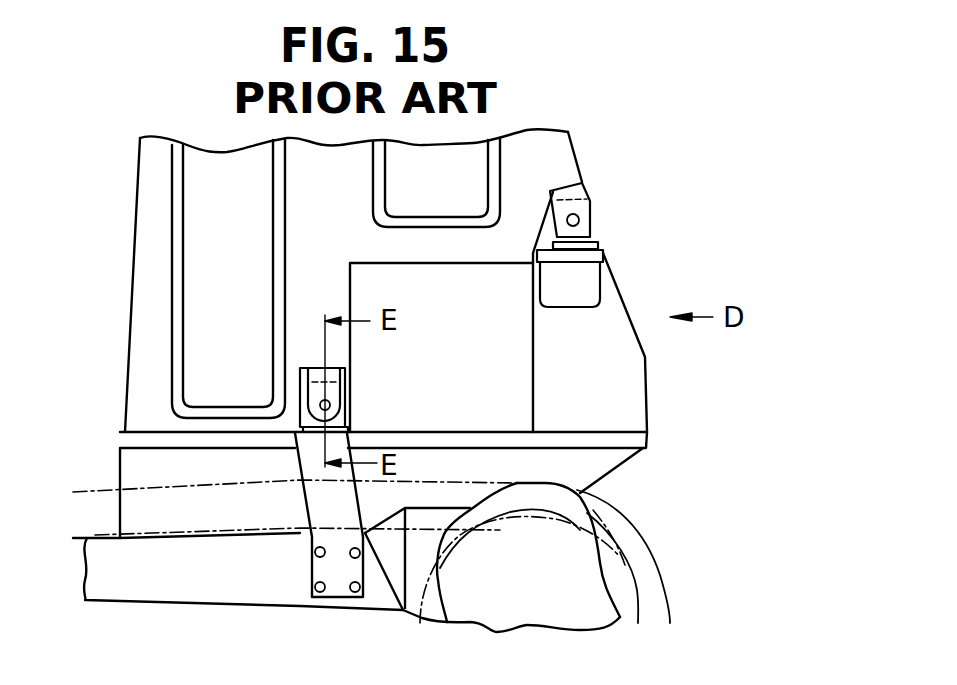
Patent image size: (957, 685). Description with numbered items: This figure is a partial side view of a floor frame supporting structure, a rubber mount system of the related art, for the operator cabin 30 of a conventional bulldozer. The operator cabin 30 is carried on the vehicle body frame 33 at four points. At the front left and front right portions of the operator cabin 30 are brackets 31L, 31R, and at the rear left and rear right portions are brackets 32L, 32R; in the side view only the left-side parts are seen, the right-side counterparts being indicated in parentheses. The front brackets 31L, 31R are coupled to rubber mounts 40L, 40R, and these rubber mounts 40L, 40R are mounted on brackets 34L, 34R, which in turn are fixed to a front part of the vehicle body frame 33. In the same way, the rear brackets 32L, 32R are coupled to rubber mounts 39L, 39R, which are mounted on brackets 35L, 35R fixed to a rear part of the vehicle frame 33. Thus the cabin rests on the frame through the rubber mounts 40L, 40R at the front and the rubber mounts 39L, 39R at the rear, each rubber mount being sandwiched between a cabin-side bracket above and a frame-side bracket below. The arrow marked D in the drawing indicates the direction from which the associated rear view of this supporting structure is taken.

The operator cabin 30 is at (143, 187).
The front left bracket 31L is at (183, 352).
The front right bracket 31R is at (313, 378).
The rear left bracket 32L is at (677, 186).
The rear right bracket 32R is at (585, 188).
The vehicle body frame 33 is at (192, 585).
The front left frame bracket 34L is at (302, 546).
The front right frame bracket 34R is at (313, 508).
The rear left frame bracket 35L is at (677, 319).
The rear right frame bracket 35R is at (583, 295).
The rear left rubber mount 39L is at (686, 226).
The rear right rubber mount 39R is at (593, 235).
The front left rubber mount 40L is at (185, 424).
The front right rubber mount 40R is at (307, 420).